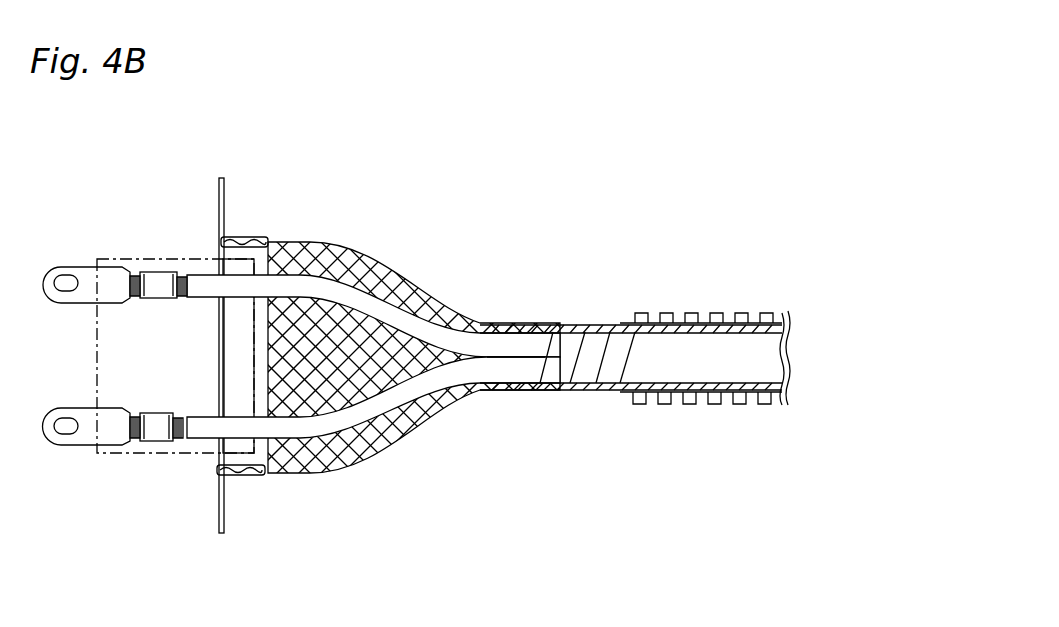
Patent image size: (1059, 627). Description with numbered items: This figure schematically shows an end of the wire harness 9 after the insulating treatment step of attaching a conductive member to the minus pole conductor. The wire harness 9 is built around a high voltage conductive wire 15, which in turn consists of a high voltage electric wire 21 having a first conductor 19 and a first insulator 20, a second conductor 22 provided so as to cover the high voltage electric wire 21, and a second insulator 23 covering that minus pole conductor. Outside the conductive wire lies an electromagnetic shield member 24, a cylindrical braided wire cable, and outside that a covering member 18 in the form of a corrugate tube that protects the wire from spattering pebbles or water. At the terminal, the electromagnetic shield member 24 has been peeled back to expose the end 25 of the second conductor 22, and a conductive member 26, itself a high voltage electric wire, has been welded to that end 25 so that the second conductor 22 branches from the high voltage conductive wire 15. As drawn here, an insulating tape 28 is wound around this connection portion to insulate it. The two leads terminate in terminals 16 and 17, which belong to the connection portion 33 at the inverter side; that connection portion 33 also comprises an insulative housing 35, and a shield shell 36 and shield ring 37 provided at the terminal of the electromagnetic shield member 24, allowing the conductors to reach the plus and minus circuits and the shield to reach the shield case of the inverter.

The wire harness 9 is at (411, 348).
The high voltage conductive wire 15 is at (582, 390).
The terminal 16 is at (63, 447).
The terminal 17 is at (80, 268).
The covering member 18 is at (705, 325).
The first conductor 19 is at (175, 442).
The first insulator 20 is at (403, 372).
The high voltage electric wire 21 is at (403, 348).
The second conductor 22 is at (603, 387).
The second insulator 23 is at (707, 367).
The electromagnetic shield member 24 is at (335, 243).
The end of the second conductor 25 is at (608, 378).
The conductive member 26 is at (418, 320).
The insulating tape 28 is at (557, 373).
The connection portion at the inverter side 33 is at (193, 181).
The insulative housing 35 is at (145, 258).
The shield shell 36 is at (228, 185).
The shield ring 37 is at (250, 238).